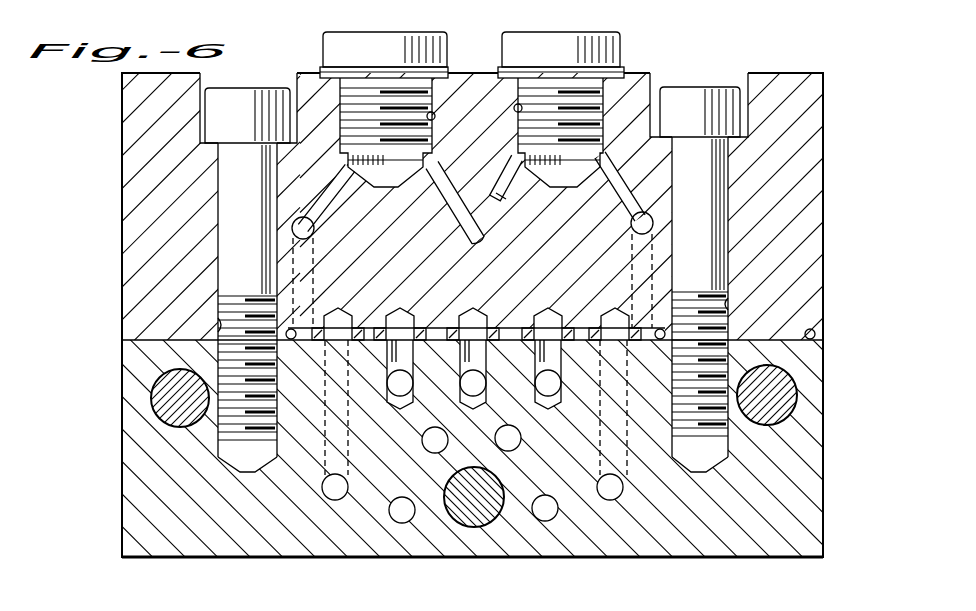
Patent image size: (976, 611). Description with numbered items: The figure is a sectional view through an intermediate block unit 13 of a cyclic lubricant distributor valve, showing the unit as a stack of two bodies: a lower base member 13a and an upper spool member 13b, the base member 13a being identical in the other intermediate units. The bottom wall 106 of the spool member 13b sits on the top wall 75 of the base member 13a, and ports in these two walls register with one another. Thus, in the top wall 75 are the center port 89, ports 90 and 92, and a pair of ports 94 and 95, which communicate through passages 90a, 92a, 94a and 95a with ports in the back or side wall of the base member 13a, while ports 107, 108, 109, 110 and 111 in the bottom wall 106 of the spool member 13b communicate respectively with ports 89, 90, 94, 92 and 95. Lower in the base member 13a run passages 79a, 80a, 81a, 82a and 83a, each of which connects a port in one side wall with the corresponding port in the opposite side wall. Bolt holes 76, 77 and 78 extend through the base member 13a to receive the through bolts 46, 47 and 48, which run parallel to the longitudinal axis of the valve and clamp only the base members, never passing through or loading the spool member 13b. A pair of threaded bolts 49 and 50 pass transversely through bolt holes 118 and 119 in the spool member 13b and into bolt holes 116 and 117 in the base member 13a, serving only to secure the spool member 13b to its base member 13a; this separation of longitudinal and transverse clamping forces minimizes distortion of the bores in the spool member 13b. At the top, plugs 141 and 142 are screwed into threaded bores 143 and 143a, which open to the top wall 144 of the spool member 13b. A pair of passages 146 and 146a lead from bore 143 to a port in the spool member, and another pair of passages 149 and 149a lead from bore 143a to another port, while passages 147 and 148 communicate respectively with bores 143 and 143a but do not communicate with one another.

The intermediate block unit 13 is at (870, 300).
The base member 13a is at (826, 507).
The spool member 13b is at (830, 198).
The through bolt 46 is at (154, 384).
The through bolt 47 is at (453, 513).
The through bolt 48 is at (770, 412).
The threaded bolt 49 is at (720, 188).
The threaded bolt 50 is at (218, 212).
The top wall 75 is at (815, 331).
The bolt hole 76 is at (163, 416).
The bolt hole 77 is at (468, 527).
The bolt hole 78 is at (784, 383).
The passage 79a is at (390, 515).
The passage 80a is at (424, 443).
The passage 81a is at (468, 388).
The passage 82a is at (519, 447).
The passage 83a is at (534, 514).
The center port 89 is at (462, 352).
The port 90 is at (533, 348).
The passage 90a is at (544, 389).
The port 92 is at (388, 352).
The passage 92a is at (396, 387).
The port 94 is at (603, 348).
The passage 94a is at (613, 499).
The port 95 is at (323, 353).
The passage 95a is at (325, 497).
The bottom wall 106 is at (818, 344).
The port 107 is at (473, 318).
The port 108 is at (548, 318).
The port 109 is at (615, 318).
The port 110 is at (403, 318).
The port 111 is at (332, 320).
The bolt hole 116 is at (218, 428).
The bolt hole 117 is at (672, 440).
The bolt hole 118 is at (218, 324).
The bolt hole 119 is at (730, 304).
The plug 141 is at (323, 70).
The plug 142 is at (622, 70).
The threaded bore 143 is at (434, 118).
The threaded bore 143a is at (514, 107).
The top wall 144 is at (790, 72).
The passage 146 is at (322, 206).
The passage 146a is at (316, 260).
The passage 147 is at (441, 206).
The passage 148 is at (513, 185).
The passage 149 is at (618, 200).
The passage 149a is at (632, 262).